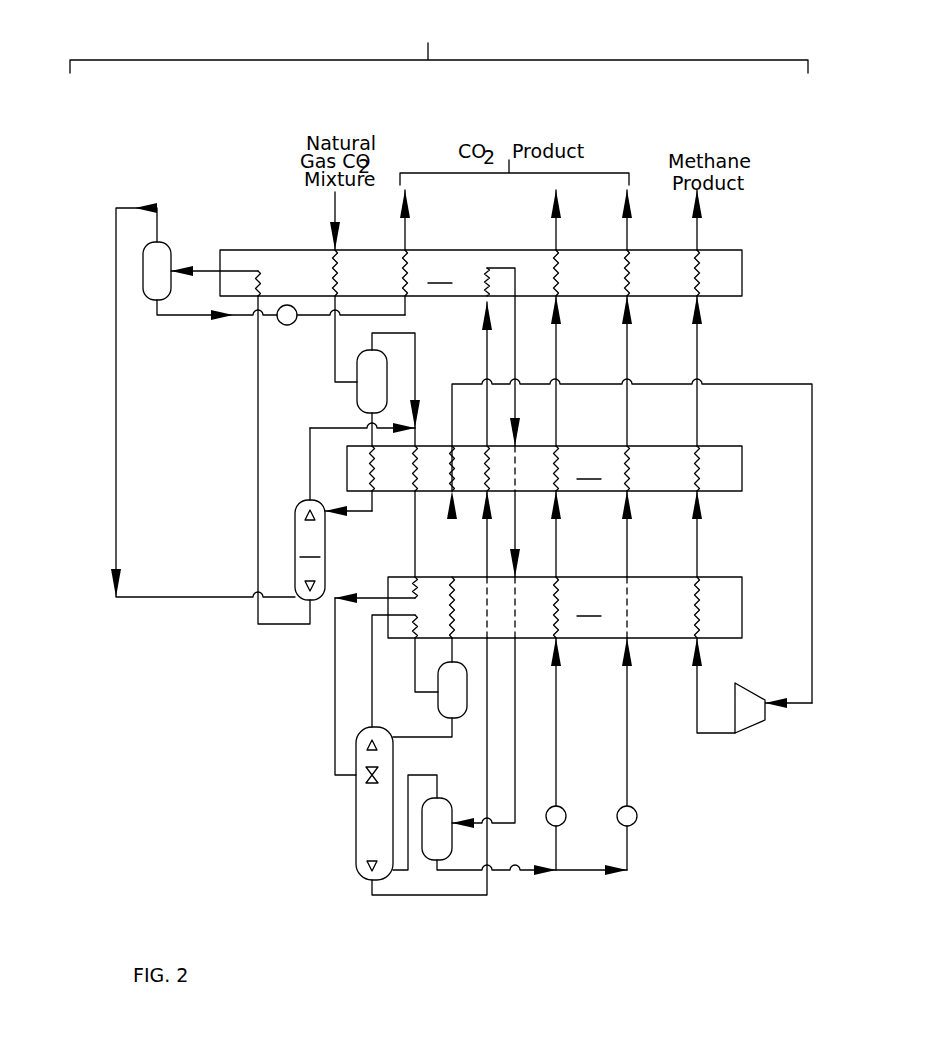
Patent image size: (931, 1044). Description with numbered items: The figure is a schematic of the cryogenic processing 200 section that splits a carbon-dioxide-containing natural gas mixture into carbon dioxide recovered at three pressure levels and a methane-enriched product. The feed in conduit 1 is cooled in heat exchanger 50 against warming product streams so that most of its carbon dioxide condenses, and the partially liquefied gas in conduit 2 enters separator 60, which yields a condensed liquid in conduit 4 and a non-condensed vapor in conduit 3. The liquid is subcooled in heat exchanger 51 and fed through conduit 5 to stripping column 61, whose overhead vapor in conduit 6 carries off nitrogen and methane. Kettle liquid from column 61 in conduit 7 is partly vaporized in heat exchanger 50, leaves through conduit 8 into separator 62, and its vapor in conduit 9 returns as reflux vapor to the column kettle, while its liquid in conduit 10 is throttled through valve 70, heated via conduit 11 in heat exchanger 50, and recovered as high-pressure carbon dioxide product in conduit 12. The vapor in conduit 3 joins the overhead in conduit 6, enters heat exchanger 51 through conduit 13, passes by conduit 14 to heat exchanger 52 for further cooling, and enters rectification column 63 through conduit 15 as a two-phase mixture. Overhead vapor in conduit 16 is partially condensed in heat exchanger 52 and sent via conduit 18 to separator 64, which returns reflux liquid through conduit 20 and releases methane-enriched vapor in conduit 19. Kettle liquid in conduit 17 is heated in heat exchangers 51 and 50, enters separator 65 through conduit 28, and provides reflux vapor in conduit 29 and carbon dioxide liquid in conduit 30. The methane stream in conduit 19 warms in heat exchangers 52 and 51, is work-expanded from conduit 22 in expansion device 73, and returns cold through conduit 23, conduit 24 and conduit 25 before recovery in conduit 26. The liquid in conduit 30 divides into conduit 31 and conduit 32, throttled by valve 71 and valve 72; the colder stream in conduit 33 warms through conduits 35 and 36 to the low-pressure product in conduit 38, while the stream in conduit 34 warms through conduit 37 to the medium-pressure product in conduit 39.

The cryogenic processing section 200 is at (439, 40).
The conduit 1 is at (335, 204).
The conduit 2 is at (333, 382).
The conduit 3 is at (415, 366).
The conduit 4 is at (352, 431).
The conduit 5 is at (352, 516).
The conduit 6 is at (310, 465).
The conduit 7 is at (258, 560).
The conduit 8 is at (206, 278).
The conduit 9 is at (116, 404).
The conduit 10 is at (195, 320).
The conduit 11 is at (405, 308).
The conduit 12 is at (405, 232).
The conduit 13 is at (418, 437).
The combined stream 14 is at (415, 520).
The conduit 15 is at (335, 670).
The conduit 16 is at (372, 670).
The conduit 17 is at (405, 897).
The conduit 18 is at (434, 699).
The conduit 19 is at (452, 652).
The conduit 20 is at (436, 739).
The conduit 22 is at (745, 385).
The conduit 23 is at (697, 729).
The conduit 24 is at (697, 545).
The conduit 25 is at (697, 339).
The conduit 26 is at (707, 221).
The conduit 28 is at (528, 740).
The conduit 29 is at (437, 793).
The conduit 30 is at (495, 872).
The conduit 31 is at (556, 862).
The conduit 32 is at (627, 862).
The conduit 33 is at (556, 758).
The conduit 34 is at (627, 713).
The conduit 35 is at (556, 545).
The conduit 36 is at (556, 339).
The conduit 37 is at (627, 340).
The conduit 38 is at (556, 235).
The conduit 39 is at (627, 232).
The heat exchanger 50 is at (481, 273).
The heat exchanger 51 is at (544, 468).
The heat exchanger 52 is at (565, 607).
The separator 60 is at (357, 402).
The stripping column 61 is at (310, 550).
The separator 62 is at (146, 305).
The rectification column 63 is at (356, 855).
The separator 64 is at (467, 710).
The separator 65 is at (452, 843).
The valve 70 is at (296, 323).
The valve 71 is at (565, 820).
The valve 72 is at (636, 820).
The expansion device 73 is at (752, 725).